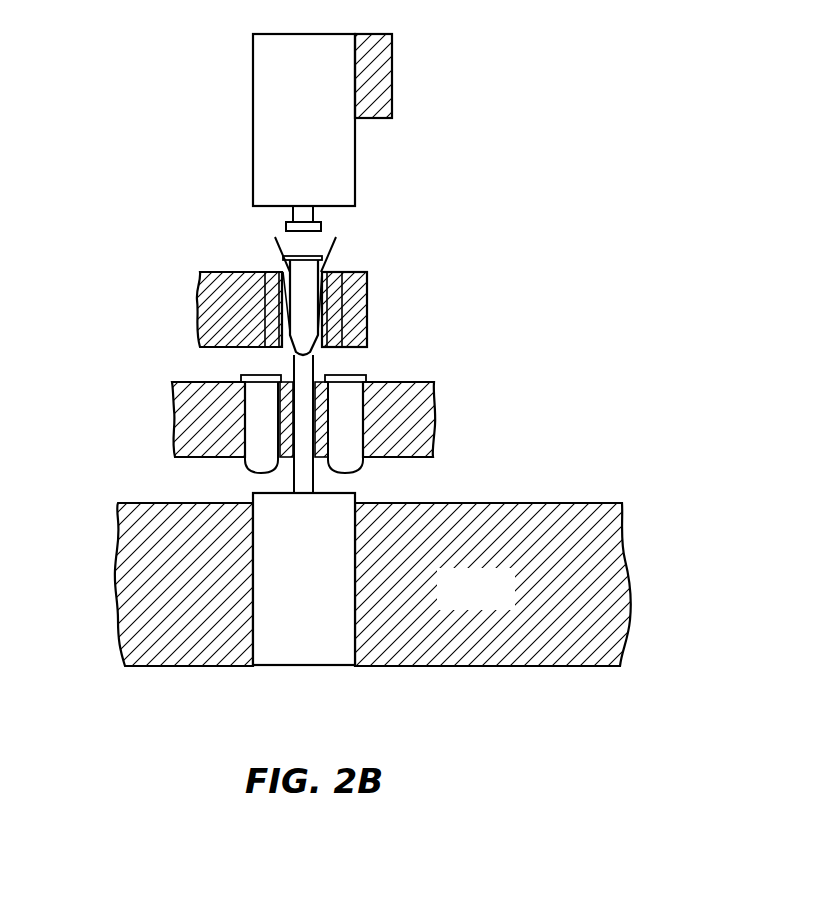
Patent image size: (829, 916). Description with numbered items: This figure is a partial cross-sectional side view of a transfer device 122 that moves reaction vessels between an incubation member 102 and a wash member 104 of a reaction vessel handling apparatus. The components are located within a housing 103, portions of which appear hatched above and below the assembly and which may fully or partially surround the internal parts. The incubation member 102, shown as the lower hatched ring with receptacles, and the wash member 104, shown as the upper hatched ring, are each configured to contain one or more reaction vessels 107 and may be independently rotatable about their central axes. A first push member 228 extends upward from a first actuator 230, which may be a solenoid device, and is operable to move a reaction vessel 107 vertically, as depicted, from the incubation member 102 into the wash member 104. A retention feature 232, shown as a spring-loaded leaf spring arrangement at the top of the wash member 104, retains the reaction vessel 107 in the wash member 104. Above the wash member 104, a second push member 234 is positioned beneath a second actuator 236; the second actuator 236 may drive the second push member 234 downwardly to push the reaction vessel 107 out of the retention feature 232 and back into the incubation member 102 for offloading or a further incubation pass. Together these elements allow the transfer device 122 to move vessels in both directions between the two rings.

The transfer device 122 is at (213, 235).
The second actuator 236 is at (304, 128).
The housing 103 is at (392, 70).
The second push member 234 is at (286, 227).
The retention feature 232 is at (338, 235).
The wash member 104 is at (367, 308).
The reaction vessel 107 is at (305, 310).
The first push member 228 is at (302, 368).
The incubation member 102 is at (438, 441).
The first actuator 230 is at (304, 579).